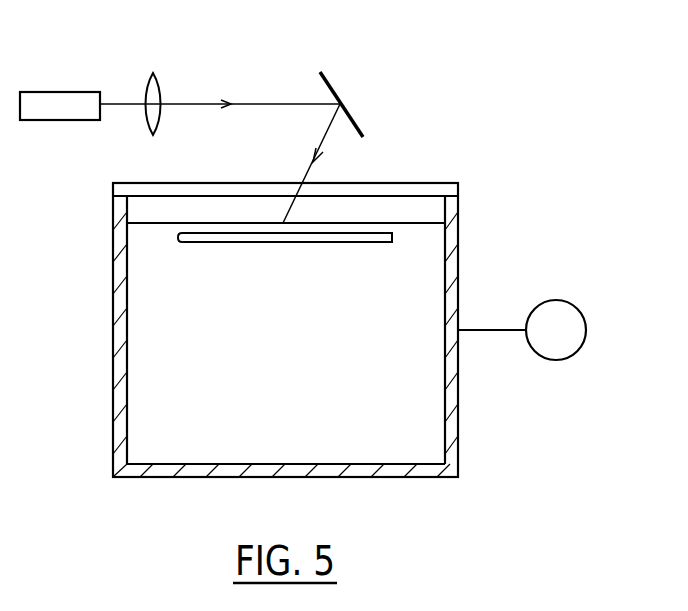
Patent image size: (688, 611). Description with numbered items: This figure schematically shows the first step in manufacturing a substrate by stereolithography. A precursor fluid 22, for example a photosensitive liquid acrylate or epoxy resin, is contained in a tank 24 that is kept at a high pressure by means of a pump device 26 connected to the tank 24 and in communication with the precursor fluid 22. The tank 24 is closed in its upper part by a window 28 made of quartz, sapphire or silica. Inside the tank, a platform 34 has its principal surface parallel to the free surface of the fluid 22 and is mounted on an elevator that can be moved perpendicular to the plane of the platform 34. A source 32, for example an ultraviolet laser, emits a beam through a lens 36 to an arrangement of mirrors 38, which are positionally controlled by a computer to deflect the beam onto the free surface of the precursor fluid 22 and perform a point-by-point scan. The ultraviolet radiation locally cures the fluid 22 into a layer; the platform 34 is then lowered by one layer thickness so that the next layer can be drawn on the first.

The precursor fluid 22 is at (148, 408).
The tank 24 is at (119, 318).
The pump device 26 is at (560, 323).
The window 28 is at (427, 190).
The source 32 is at (62, 102).
The platform 34 is at (190, 240).
The lens 36 is at (158, 87).
The mirrors 38 is at (358, 118).